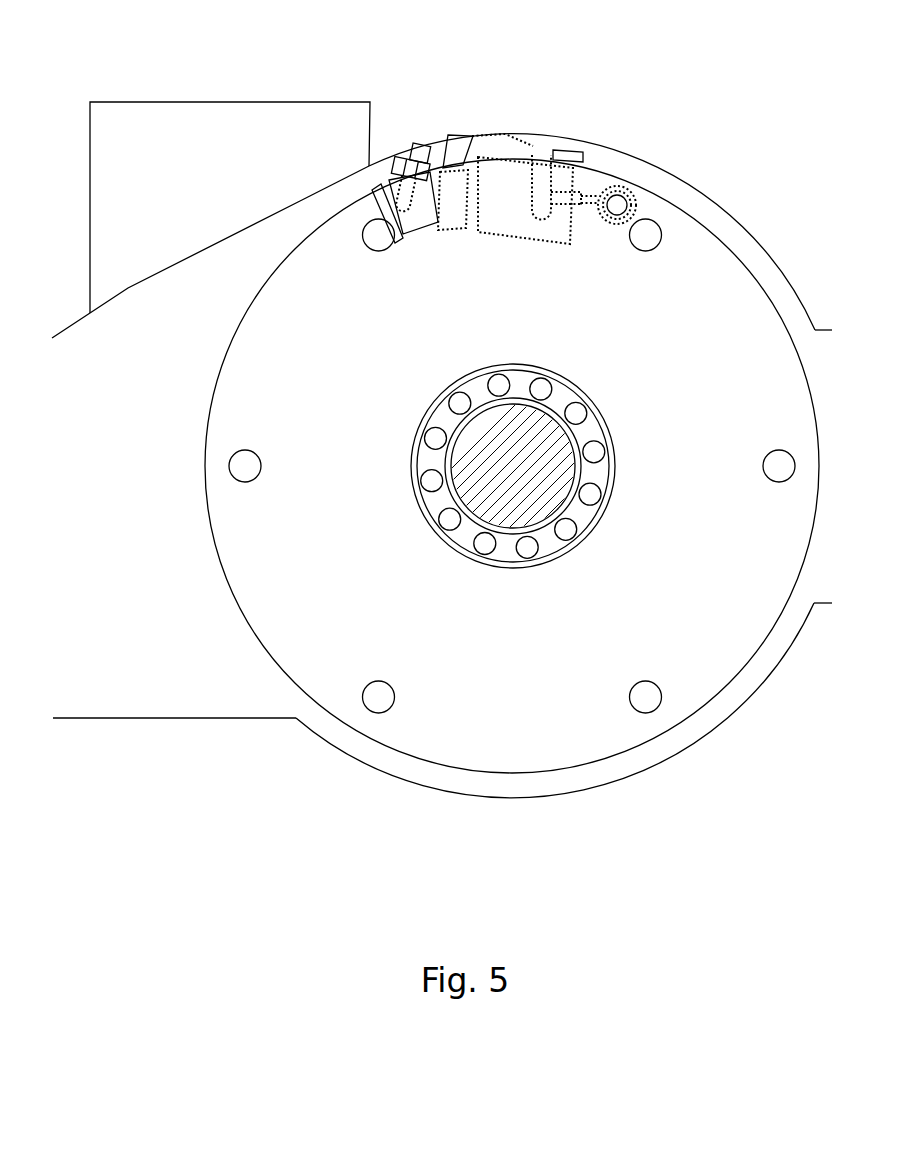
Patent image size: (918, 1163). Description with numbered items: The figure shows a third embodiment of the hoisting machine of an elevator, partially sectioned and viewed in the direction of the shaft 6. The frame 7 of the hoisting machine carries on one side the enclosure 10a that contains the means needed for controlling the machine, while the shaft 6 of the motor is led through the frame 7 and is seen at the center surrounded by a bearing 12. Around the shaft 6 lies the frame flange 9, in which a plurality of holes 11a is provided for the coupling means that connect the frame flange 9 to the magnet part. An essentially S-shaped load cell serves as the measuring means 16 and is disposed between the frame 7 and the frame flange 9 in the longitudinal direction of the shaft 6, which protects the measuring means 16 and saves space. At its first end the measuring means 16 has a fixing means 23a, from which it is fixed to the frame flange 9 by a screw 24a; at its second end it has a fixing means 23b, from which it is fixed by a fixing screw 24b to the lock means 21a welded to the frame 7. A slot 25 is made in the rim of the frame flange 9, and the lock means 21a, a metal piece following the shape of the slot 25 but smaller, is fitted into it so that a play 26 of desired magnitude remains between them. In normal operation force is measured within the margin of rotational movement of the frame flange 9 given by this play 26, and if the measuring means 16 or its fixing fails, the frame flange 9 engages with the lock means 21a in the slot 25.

The enclosure 10a is at (246, 110).
The lock means 21a is at (373, 180).
The frame 7 is at (443, 797).
The frame flange 9 is at (527, 772).
The holes 11a is at (650, 705).
The bearing 12 is at (548, 540).
The shaft 6 is at (521, 482).
The play 26 is at (406, 243).
The slot 25 is at (437, 225).
The fixing screw 24b is at (407, 148).
The fixing means 23b is at (472, 136).
The measuring means 16 is at (537, 150).
The fixing means 23a is at (597, 192).
The screw 24a is at (624, 194).